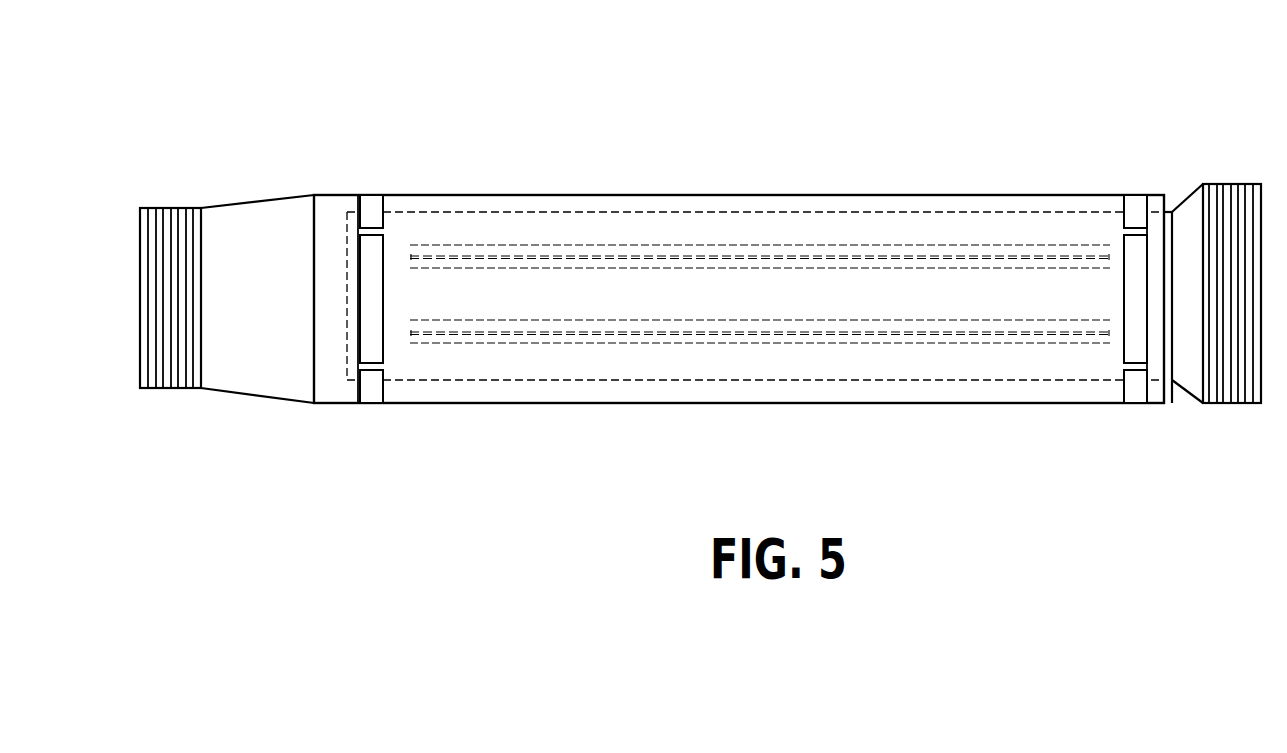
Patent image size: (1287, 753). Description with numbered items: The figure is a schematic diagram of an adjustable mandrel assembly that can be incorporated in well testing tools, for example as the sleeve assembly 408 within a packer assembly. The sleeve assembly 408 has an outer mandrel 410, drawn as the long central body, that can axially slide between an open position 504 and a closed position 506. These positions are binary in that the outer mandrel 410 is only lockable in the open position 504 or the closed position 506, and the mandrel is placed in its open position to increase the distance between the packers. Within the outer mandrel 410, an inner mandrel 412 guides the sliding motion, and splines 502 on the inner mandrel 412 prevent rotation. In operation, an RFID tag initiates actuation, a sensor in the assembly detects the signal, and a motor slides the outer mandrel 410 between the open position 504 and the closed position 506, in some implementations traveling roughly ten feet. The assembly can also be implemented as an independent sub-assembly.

The sleeve assembly 408 is at (366, 123).
The outer mandrel 410 is at (780, 416).
The inner mandrel 412 is at (994, 203).
The splines 502 is at (688, 243).
The open position 504 is at (1140, 416).
The closed position 506 is at (376, 416).